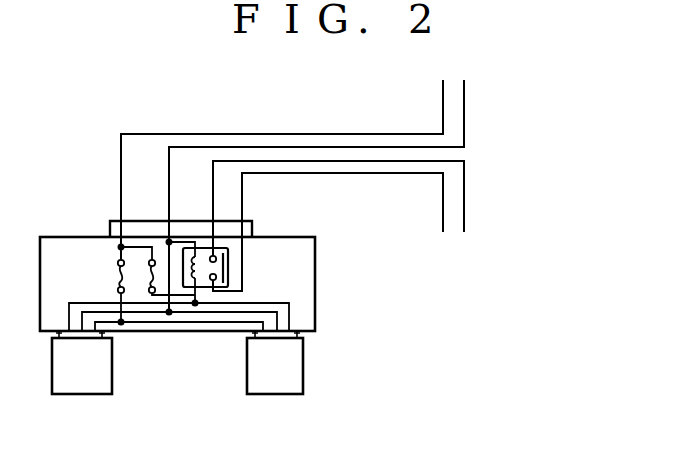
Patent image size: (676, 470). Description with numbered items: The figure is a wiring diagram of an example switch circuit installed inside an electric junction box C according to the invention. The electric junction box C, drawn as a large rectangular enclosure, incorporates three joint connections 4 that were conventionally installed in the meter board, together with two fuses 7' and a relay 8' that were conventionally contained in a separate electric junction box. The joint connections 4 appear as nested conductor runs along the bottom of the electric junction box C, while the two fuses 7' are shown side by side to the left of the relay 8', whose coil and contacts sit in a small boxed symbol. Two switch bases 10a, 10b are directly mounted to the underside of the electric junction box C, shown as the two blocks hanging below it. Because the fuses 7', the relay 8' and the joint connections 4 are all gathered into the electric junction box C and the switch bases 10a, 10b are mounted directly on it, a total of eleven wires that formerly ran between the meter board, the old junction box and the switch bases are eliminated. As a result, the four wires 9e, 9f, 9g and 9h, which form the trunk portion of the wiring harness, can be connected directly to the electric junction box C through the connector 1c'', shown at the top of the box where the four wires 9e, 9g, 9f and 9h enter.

The connector 1c'' is at (152, 188).
The fuses 7' is at (127, 254).
The relay 8' is at (236, 246).
The wire 9e is at (430, 133).
The wire 9g is at (451, 148).
The wire 9f is at (446, 163).
The wire 9h is at (430, 173).
The electric junction box C is at (316, 294).
The joint connections 4 is at (193, 305).
The switch base 10a is at (80, 397).
The switch base 10b is at (277, 397).